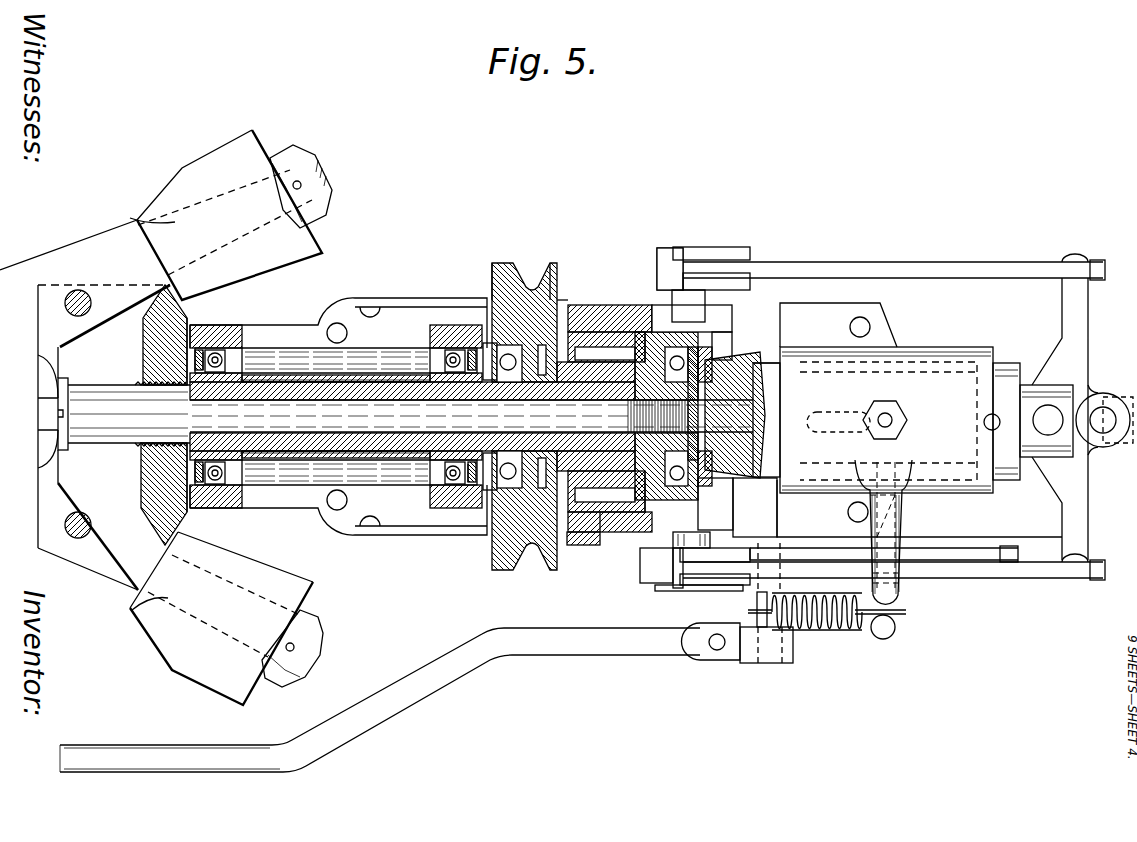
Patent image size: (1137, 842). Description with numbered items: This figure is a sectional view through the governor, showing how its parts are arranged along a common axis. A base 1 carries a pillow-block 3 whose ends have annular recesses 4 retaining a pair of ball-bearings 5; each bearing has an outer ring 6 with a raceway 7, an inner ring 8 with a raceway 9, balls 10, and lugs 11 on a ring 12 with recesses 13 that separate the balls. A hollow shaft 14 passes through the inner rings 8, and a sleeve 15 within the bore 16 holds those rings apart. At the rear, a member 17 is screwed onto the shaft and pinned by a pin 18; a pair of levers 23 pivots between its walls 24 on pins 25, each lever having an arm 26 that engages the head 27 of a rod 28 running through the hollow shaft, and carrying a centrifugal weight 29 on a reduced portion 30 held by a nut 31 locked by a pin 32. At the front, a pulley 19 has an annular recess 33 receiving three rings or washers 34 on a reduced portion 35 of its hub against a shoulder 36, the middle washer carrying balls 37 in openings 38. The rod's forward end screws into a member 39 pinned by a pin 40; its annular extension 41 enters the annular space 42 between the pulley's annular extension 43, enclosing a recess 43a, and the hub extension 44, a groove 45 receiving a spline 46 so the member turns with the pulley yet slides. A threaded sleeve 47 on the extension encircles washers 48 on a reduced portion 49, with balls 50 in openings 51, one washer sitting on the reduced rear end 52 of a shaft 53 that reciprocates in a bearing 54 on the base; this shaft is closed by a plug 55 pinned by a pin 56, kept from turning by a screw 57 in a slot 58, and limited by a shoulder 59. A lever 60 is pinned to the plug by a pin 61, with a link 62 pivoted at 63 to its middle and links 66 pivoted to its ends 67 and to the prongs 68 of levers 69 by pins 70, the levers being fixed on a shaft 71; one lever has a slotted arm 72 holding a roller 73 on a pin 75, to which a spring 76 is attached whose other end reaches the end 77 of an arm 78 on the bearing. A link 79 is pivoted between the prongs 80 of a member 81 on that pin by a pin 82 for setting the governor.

The base 1 is at (800, 303).
The pillow-block 3 is at (292, 322).
The annular recesses 4 is at (216, 326).
The ball-bearings 5 is at (65, 525).
The outer ring 6 is at (195, 488).
The raceway 7 is at (205, 348).
The inner ring 8 is at (336, 415).
The raceway 9 is at (195, 452).
The balls 10 is at (228, 360).
The lugs 11 is at (200, 356).
The ring 12 is at (200, 472).
The depressions or recesses 13 is at (235, 345).
The hollow shaft 14 is at (262, 380).
The sleeve 15 is at (335, 350).
The bore 16 is at (340, 320).
The member 17 is at (150, 320).
The pin 18 is at (140, 384).
The pulley 19 is at (530, 572).
The levers 23 is at (85, 405).
The walls 24 is at (66, 435).
The pins 25 is at (70, 295).
The arm 26 is at (40, 445).
The head 27 is at (60, 378).
The rod 28 is at (112, 398).
The centrifugal weight 29 is at (226, 417).
The reduced portion 30 is at (165, 222).
The nut 31 is at (290, 150).
The pin 32 is at (300, 182).
The annular recess 33 is at (560, 300).
The rings or washers 34 is at (520, 300).
The reduced portion 35 is at (548, 300).
The shoulder 36 is at (543, 490).
The balls 37 is at (490, 492).
The openings 38 is at (510, 490).
The member 39 is at (640, 500).
The pin 40 is at (735, 415).
The annular extension 41 is at (595, 545).
The annular space or recess 42 is at (602, 535).
The annular extension 43 is at (580, 533).
The recess 43a is at (590, 332).
The extension 44 is at (605, 345).
The longitudinal groove 45 is at (640, 330).
The spline 46 is at (648, 303).
The sleeve 47 is at (660, 250).
The rings or washers 48 is at (680, 350).
The reduced portion 49 is at (700, 355).
The balls 50 is at (658, 491).
The openings 51 is at (704, 505).
The reduced rear end 52 is at (712, 370).
The shaft 53 is at (768, 482).
The bearing 54 is at (886, 420).
The plug 55 is at (1010, 363).
The pin 56 is at (995, 430).
The bolt or screw 57 is at (888, 400).
The longitudinal slot 58 is at (835, 412).
The shoulder 59 is at (758, 360).
The lever 60 is at (1065, 419).
The pin 61 is at (1052, 405).
The link 62 is at (1115, 395).
The pivot 63 is at (1105, 425).
The links 66 is at (882, 262).
The ends 67 is at (1072, 256).
The prongs 68 is at (735, 262).
The levers 69 is at (668, 250).
The pins 70 is at (700, 247).
The shaft 71 is at (685, 300).
The slotted arm 72 is at (992, 562).
The anti-friction roller 73 is at (770, 560).
The pin or bolt 75 is at (757, 605).
The spring 76 is at (830, 632).
The end 77 is at (880, 640).
The arm or projection 78 is at (903, 522).
The link 79 is at (400, 700).
The prongs 80 is at (700, 650).
The member 81 is at (770, 663).
The pin 82 is at (715, 650).